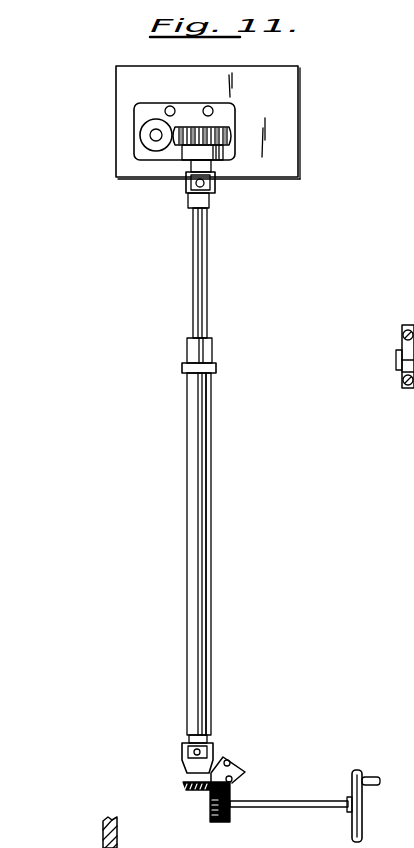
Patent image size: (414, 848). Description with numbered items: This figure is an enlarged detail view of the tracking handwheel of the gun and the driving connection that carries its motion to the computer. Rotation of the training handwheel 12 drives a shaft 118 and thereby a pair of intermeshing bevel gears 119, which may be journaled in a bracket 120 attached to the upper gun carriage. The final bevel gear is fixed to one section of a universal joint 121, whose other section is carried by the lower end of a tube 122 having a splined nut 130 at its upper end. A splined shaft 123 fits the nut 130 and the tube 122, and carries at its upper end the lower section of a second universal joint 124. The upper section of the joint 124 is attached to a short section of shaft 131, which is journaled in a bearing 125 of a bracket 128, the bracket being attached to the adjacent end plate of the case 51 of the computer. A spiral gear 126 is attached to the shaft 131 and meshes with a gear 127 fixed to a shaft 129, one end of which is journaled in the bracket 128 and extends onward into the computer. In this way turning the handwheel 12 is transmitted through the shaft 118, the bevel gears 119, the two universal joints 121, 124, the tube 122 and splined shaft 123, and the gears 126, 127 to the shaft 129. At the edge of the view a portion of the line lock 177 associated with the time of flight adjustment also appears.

The case 51 is at (285, 122).
The bracket 128 is at (189, 107).
The gear 127 is at (143, 128).
The shaft 129 is at (153, 137).
The spiral gear 126 is at (222, 132).
The bearing 125 is at (190, 157).
The shaft 131 is at (213, 166).
The universal joint 124 is at (217, 192).
The splined shaft 123 is at (193, 237).
The splined nut 130 is at (208, 354).
The tube 122 is at (192, 507).
The universal joint 121 is at (183, 746).
The bracket 120 is at (243, 771).
The bevel gears 119 is at (200, 798).
The shaft 118 is at (290, 808).
The training handwheel 12 is at (362, 830).
The line lock 177 is at (133, 832).